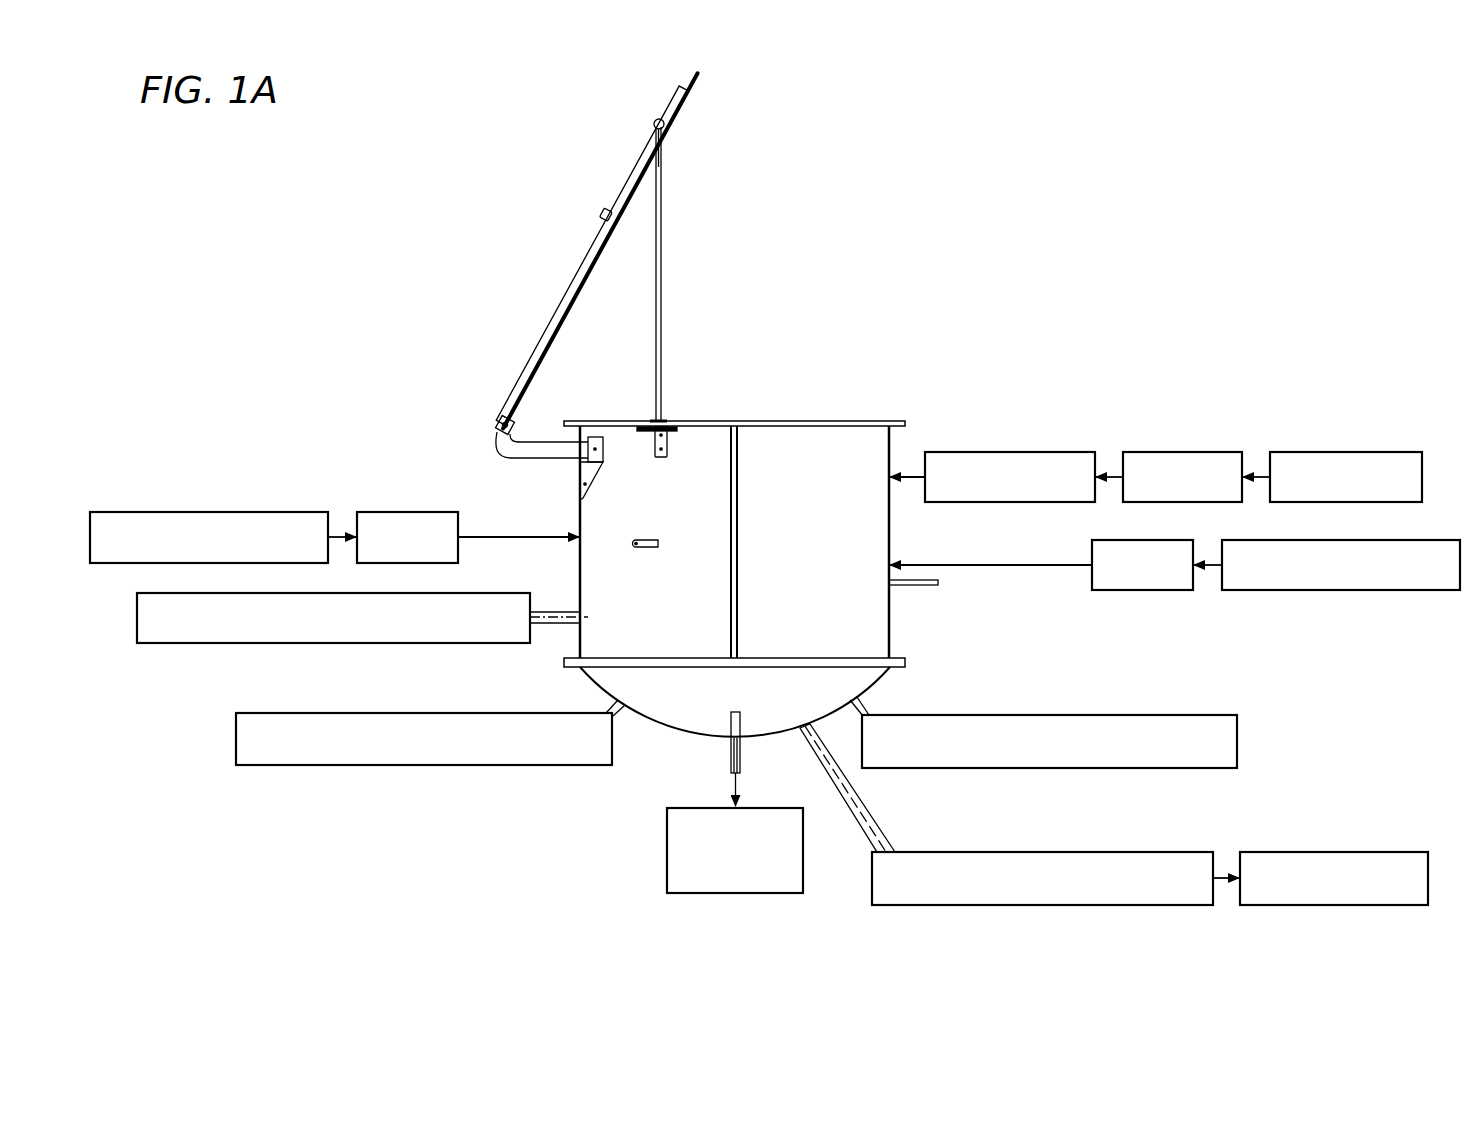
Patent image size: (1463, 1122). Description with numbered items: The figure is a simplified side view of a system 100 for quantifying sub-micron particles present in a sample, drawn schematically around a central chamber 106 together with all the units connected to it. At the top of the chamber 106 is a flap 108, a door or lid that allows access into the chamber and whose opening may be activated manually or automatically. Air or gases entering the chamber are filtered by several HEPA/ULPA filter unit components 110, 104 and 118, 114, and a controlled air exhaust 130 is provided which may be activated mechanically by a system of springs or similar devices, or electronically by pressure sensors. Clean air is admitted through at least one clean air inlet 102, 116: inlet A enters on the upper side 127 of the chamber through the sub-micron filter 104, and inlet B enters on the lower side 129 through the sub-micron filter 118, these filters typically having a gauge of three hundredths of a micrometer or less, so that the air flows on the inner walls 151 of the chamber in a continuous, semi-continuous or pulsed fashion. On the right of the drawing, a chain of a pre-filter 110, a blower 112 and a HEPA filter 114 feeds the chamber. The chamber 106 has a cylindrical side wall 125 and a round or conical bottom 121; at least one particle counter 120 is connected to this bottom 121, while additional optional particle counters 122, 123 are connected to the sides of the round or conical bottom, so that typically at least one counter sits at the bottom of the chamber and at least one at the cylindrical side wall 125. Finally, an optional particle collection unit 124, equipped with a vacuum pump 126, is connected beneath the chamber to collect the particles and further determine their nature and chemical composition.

The system 100 is at (990, 140).
The clean air inlet 102 is at (212, 512).
The sub-micron filter 104 is at (388, 512).
The chamber 106 is at (672, 644).
The flap 108 is at (690, 98).
The HEPA/ULPA filter unit component 110 is at (1350, 452).
The blower 112 is at (1187, 452).
The HEPA/ULPA filter unit component 114 is at (1015, 452).
The clean air inlet 116 is at (1337, 590).
The sub-micron filter 118 is at (1138, 590).
The particle counter 120 is at (667, 853).
The round or conical bottom 121 is at (852, 684).
The optional particle counter 122 is at (1053, 715).
The optional particle counter 123 is at (420, 767).
The particle collection unit 124 is at (1048, 852).
The cylindrical side wall 125 is at (889, 523).
The vacuum pump 126 is at (1340, 852).
The upper side 127 is at (578, 514).
The lower side 129 is at (889, 625).
The controlled air exhaust 130 is at (172, 645).
The inner walls 151 is at (888, 498).